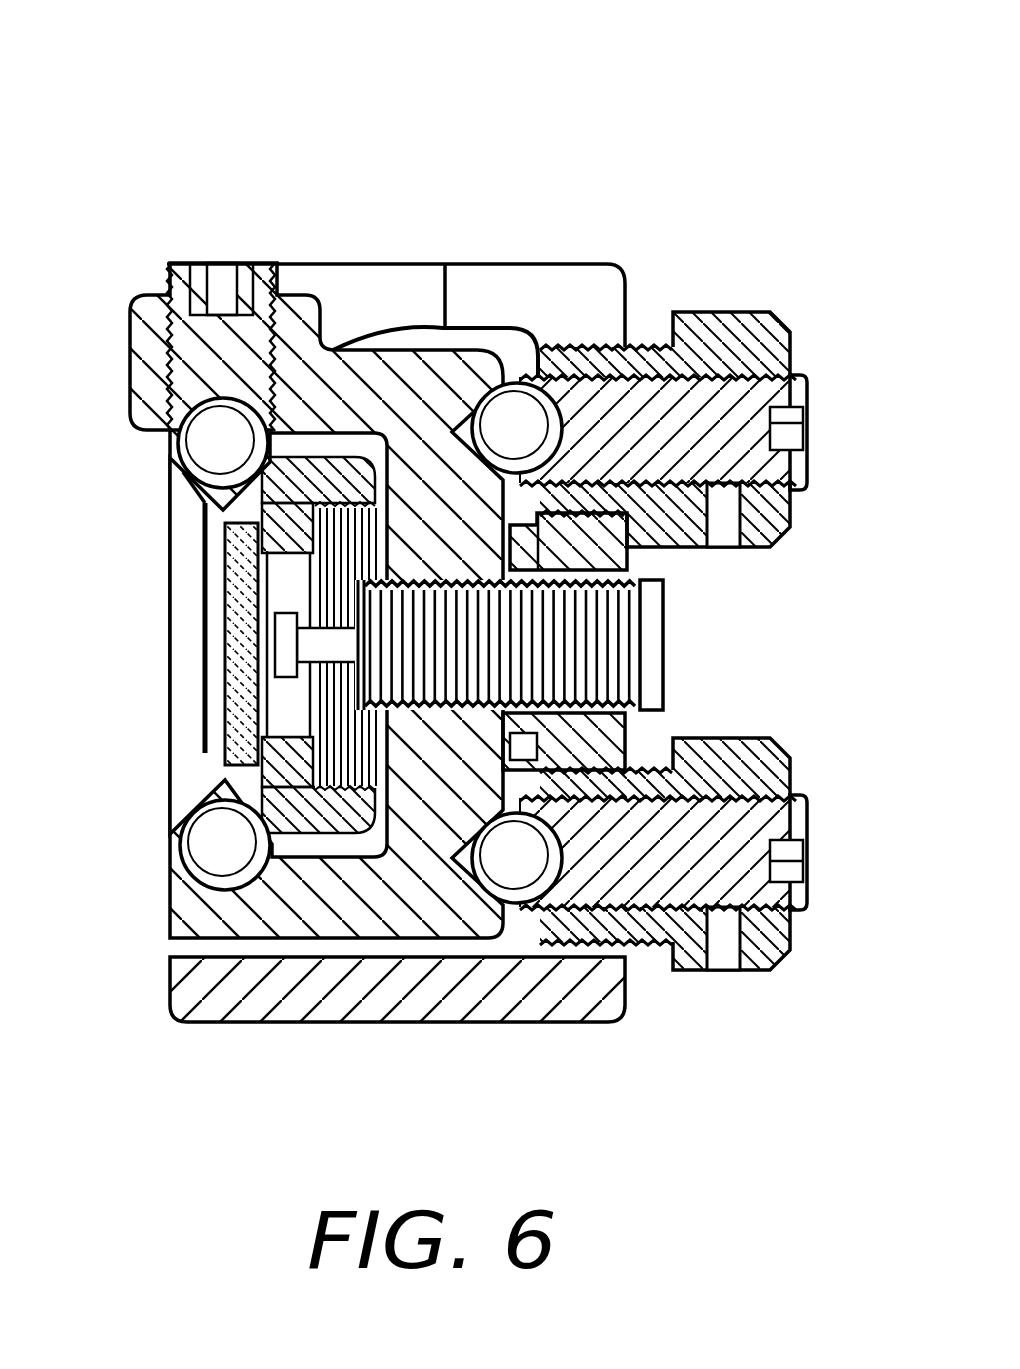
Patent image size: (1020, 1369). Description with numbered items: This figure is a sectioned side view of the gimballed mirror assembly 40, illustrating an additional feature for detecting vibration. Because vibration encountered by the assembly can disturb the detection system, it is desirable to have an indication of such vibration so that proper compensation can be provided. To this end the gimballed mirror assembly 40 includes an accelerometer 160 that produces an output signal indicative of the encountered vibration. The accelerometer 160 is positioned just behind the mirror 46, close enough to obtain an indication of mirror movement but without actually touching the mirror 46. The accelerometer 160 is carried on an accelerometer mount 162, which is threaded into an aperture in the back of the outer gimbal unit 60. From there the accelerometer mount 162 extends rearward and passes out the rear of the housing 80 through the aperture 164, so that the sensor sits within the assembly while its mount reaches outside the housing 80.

The gimballed mirror assembly 40 is at (428, 573).
The mirror 46 is at (240, 690).
The outer gimbal unit 60 is at (437, 912).
The housing 80 is at (322, 1024).
The accelerometer 160 is at (287, 640).
The accelerometer mount 162 is at (632, 664).
The aperture 164 is at (625, 557).